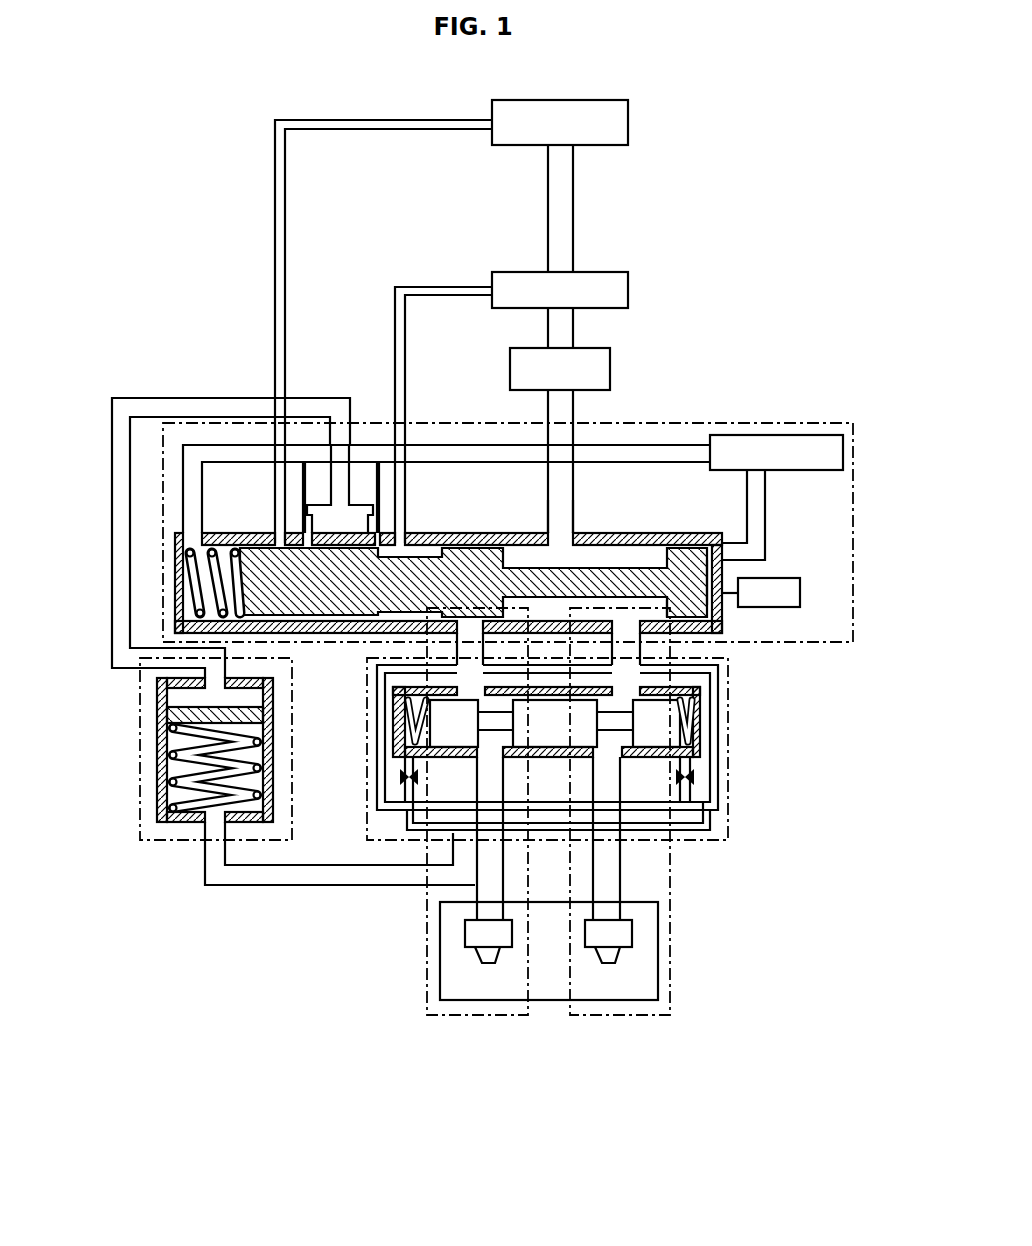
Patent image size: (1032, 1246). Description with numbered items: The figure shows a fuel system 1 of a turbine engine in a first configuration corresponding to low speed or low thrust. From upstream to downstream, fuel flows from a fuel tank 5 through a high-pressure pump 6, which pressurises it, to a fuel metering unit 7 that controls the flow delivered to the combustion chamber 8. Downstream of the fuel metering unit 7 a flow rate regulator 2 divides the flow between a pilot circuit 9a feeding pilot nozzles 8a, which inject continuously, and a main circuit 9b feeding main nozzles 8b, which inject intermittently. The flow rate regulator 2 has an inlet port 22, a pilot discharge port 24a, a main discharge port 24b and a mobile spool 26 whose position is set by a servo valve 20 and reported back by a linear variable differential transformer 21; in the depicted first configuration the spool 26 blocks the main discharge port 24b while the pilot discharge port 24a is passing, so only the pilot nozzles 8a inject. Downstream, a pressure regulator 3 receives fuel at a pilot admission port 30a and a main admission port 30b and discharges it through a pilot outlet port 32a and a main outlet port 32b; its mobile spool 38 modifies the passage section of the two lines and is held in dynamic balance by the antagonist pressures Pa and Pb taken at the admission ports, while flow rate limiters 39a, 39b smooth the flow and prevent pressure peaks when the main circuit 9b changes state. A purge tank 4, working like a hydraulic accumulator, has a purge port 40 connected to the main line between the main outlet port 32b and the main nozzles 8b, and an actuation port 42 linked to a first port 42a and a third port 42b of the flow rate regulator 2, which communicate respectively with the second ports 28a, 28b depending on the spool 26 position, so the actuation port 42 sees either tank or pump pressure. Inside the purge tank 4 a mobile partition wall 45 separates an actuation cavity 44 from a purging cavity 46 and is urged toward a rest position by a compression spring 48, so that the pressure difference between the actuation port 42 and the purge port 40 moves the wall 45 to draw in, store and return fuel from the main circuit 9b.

The fuel system 1 is at (724, 238).
The flow rate regulator 2 is at (785, 423).
The pressure regulator 3 is at (728, 810).
The purge tank 4 is at (140, 766).
The fuel tank 5 is at (560, 122).
The high-pressure pump 6 is at (560, 290).
The fuel metering unit 7 is at (560, 369).
The combustion chamber 8 is at (550, 985).
The pilot nozzles 8a is at (622, 933).
The main nozzles 8b is at (475, 933).
The pilot circuit 9a is at (670, 980).
The main circuit 9b is at (427, 980).
The servo valve 20 is at (776, 452).
The linear variable differential transformer 21 is at (761, 592).
The inlet port 22 is at (470, 620).
The pilot discharge port 24a is at (627, 620).
The main discharge port 24b is at (561, 540).
The mobile spool 26 is at (700, 588).
The second port 28a is at (277, 540).
The second port 28b is at (400, 540).
The pilot admission port 30a is at (627, 690).
The main admission port 30b is at (478, 658).
The pilot outlet port 32a is at (607, 834).
The main outlet port 32b is at (490, 836).
The mobile spool 38 is at (662, 720).
The flow rate limiter 39a is at (402, 777).
The flow rate limiter 39b is at (692, 778).
The purge port 40 is at (215, 816).
The actuation port 42 is at (215, 682).
The first port 42a is at (305, 540).
The third port 42b is at (378, 540).
The actuation cavity 44 is at (185, 697).
The mobile partition wall 45 is at (178, 715).
The purging cavity 46 is at (215, 768).
The compression spring 48 is at (172, 782).
The pressure at the pilot admission port Pa is at (640, 673).
The pressure at the main admission port Pb is at (446, 676).